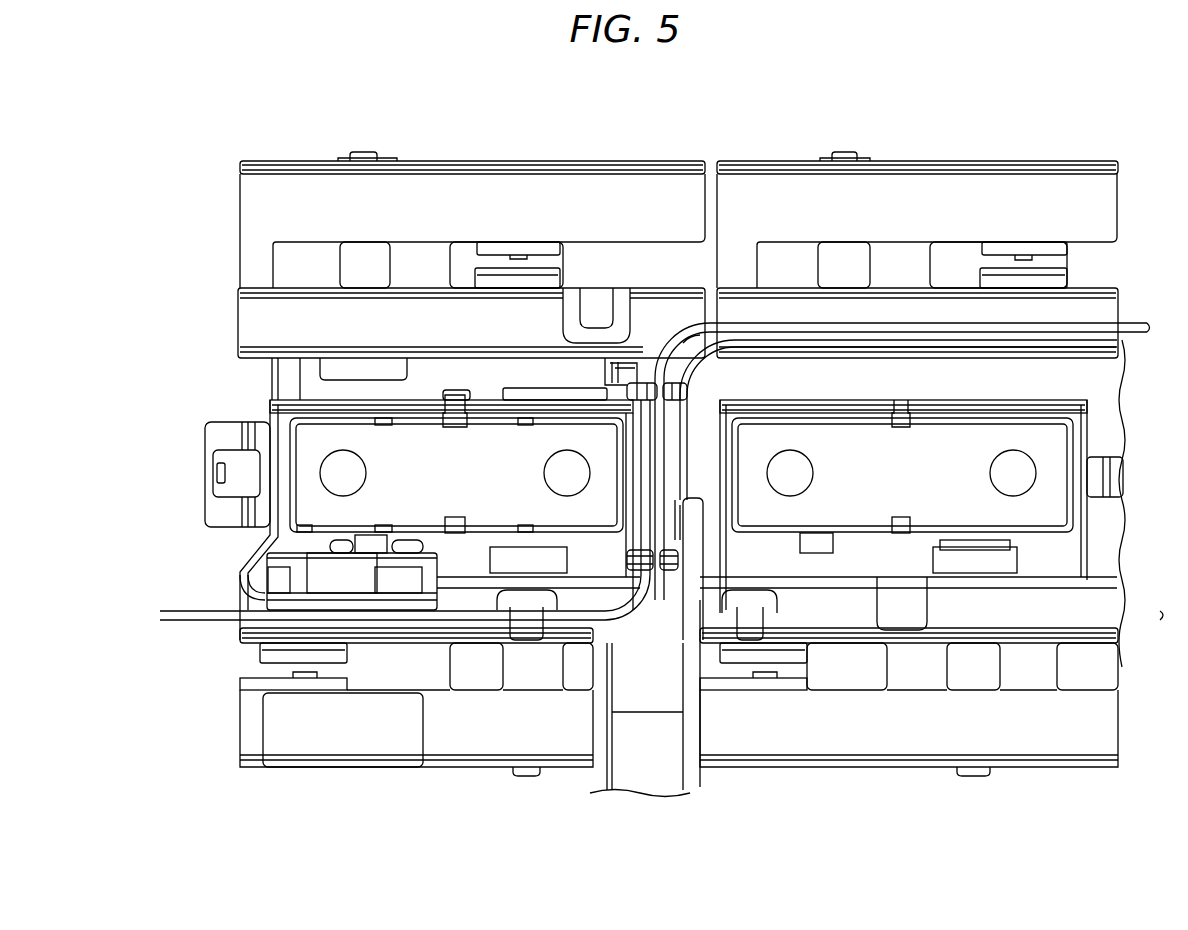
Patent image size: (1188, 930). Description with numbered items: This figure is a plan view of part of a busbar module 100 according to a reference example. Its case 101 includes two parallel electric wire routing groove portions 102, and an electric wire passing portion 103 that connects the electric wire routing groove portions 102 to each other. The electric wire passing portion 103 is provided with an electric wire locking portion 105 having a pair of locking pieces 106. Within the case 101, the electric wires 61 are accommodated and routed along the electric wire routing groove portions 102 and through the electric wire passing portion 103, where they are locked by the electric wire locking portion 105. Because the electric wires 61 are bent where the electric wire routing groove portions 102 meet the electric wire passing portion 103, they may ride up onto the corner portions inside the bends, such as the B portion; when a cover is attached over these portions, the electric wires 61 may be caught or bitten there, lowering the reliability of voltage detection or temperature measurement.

The busbar module 100 is at (878, 151).
The case 101 is at (1082, 150).
The electric wire routing groove portions 102 is at (948, 312).
The electric wire passing portion 103 is at (637, 473).
The electric wire locking portion 105 is at (628, 383).
The locking pieces 106 is at (668, 383).
The electric wires 61 is at (1122, 340).
The B portion B is at (690, 333).